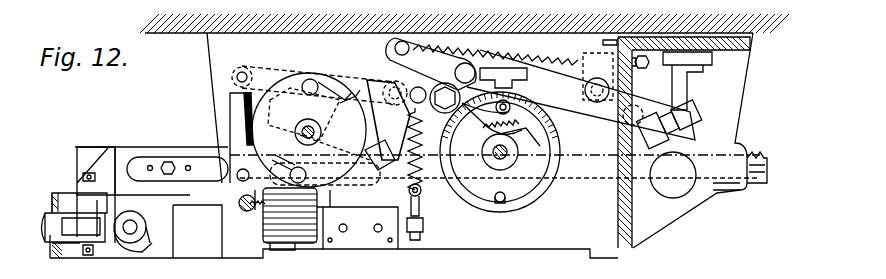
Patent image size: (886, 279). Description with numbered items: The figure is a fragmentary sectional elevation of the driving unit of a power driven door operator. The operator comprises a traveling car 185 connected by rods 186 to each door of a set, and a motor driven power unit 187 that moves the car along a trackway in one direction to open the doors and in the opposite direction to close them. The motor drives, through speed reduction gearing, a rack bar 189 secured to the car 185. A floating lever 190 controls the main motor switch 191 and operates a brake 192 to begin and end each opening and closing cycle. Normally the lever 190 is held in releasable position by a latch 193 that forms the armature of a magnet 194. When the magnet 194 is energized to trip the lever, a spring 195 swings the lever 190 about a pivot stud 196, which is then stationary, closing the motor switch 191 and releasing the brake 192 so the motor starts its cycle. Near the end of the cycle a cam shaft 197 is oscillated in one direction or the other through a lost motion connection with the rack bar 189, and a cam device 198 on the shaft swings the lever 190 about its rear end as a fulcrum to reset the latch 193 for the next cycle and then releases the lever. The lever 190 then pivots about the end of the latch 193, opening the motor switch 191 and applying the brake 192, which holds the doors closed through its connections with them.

The traveling car 185 is at (62, 156).
The rods 186 is at (44, 215).
The motor driven power unit 187 is at (575, 240).
The rack bar 189 is at (201, 170).
The floating lever 190 is at (575, 95).
The main motor switch 191 is at (694, 120).
The brake 192 is at (505, 76).
The latch 193 is at (236, 125).
The magnet 194 is at (268, 229).
The spring 195 is at (422, 176).
The pivot stud 196 is at (443, 83).
The cam shaft 197 is at (315, 130).
The cam device 198 is at (352, 112).